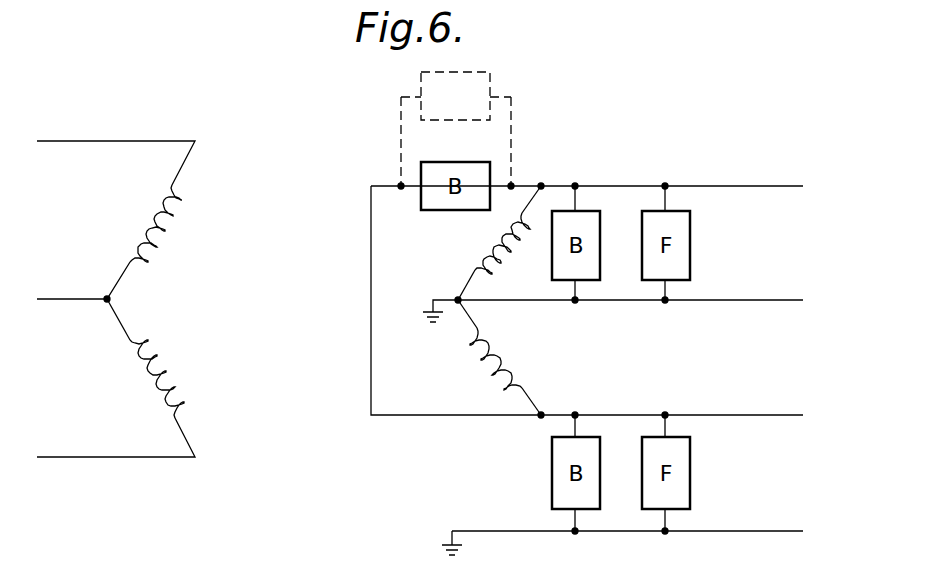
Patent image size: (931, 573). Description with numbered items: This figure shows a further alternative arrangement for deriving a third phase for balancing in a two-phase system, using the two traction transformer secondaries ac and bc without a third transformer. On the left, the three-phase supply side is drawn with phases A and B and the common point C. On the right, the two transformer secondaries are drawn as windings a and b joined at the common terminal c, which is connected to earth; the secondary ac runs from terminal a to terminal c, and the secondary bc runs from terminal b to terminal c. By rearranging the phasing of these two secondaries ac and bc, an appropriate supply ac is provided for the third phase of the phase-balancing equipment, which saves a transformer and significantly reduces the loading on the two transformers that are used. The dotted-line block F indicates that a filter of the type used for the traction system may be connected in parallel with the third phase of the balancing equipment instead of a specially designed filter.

The phase A winding A is at (156, 212).
The phase B winding B is at (157, 395).
The neutral point C is at (99, 288).
The optional filter F is at (456, 129).
The winding a is at (499, 243).
The winding b is at (501, 357).
The neutral terminal c is at (472, 301).